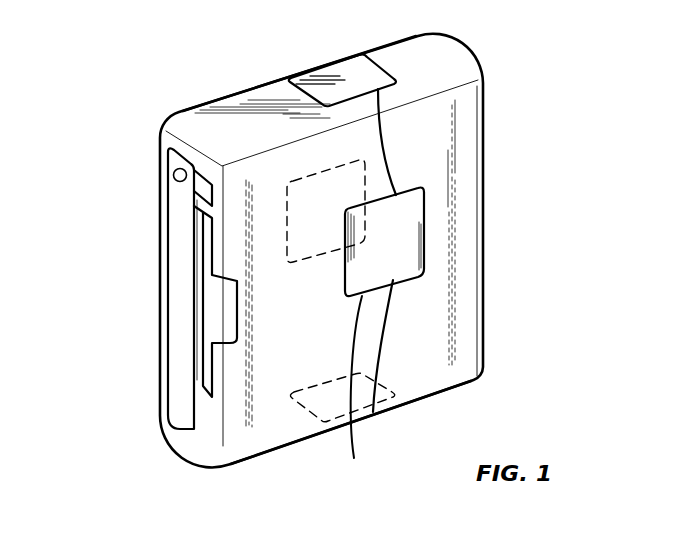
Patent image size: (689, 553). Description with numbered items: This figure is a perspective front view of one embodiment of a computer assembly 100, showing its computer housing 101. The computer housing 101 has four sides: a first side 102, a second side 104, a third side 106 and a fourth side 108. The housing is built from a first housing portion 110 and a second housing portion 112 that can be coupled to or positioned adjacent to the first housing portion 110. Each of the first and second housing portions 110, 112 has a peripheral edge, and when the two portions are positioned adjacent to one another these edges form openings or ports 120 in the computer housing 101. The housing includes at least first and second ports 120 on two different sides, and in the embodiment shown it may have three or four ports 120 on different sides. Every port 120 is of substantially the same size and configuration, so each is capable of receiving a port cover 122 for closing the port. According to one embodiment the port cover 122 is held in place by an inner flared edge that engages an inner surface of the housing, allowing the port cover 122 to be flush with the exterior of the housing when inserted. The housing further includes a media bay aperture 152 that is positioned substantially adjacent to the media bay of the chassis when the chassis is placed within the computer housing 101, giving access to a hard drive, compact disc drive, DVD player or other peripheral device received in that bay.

The computer assembly 100 is at (553, 88).
The computer housing 101 is at (479, 378).
The first side 102 is at (379, 155).
The second side 104 is at (262, 145).
The third side 106 is at (240, 95).
The fourth side 108 is at (264, 455).
The first housing portion 110 is at (327, 343).
The second housing portion 112 is at (439, 359).
The port 120 is at (354, 458).
The port cover 122 is at (405, 267).
The media bay aperture 152 is at (203, 310).